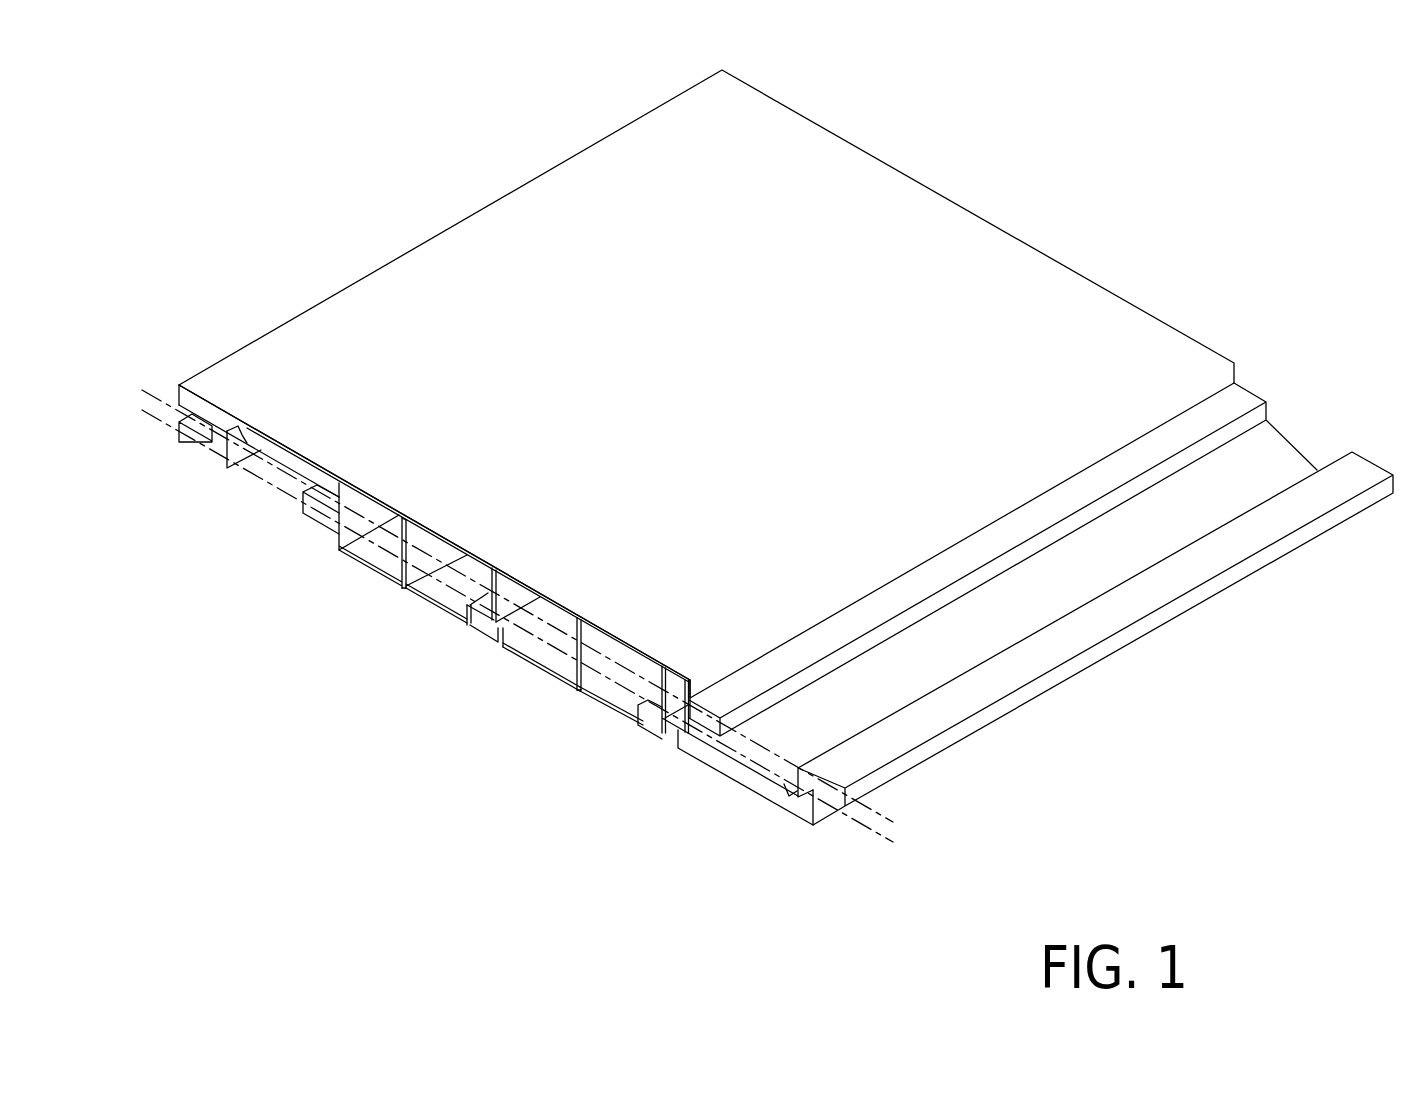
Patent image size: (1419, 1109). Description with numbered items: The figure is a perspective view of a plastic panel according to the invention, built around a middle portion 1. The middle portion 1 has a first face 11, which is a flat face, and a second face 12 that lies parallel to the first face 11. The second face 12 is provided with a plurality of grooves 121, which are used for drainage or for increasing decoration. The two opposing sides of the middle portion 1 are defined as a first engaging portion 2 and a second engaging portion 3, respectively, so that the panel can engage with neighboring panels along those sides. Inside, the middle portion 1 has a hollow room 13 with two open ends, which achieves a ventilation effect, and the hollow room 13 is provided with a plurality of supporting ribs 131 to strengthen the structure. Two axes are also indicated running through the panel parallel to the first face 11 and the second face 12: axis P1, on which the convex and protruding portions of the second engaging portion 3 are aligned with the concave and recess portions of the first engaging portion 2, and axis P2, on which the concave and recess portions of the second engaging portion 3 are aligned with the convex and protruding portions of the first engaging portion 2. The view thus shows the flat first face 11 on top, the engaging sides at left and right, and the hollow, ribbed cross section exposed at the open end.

The middle portion 1 is at (400, 612).
The first face 11 is at (940, 237).
The second face 12 is at (523, 663).
The grooves 121 is at (663, 732).
The hollow room 13 is at (450, 603).
The supporting ribs 131 is at (595, 682).
The first engaging portion 2 is at (262, 488).
The second engaging portion 3 is at (735, 800).
The axis P1 is at (541, 616).
The axis P2 is at (541, 642).